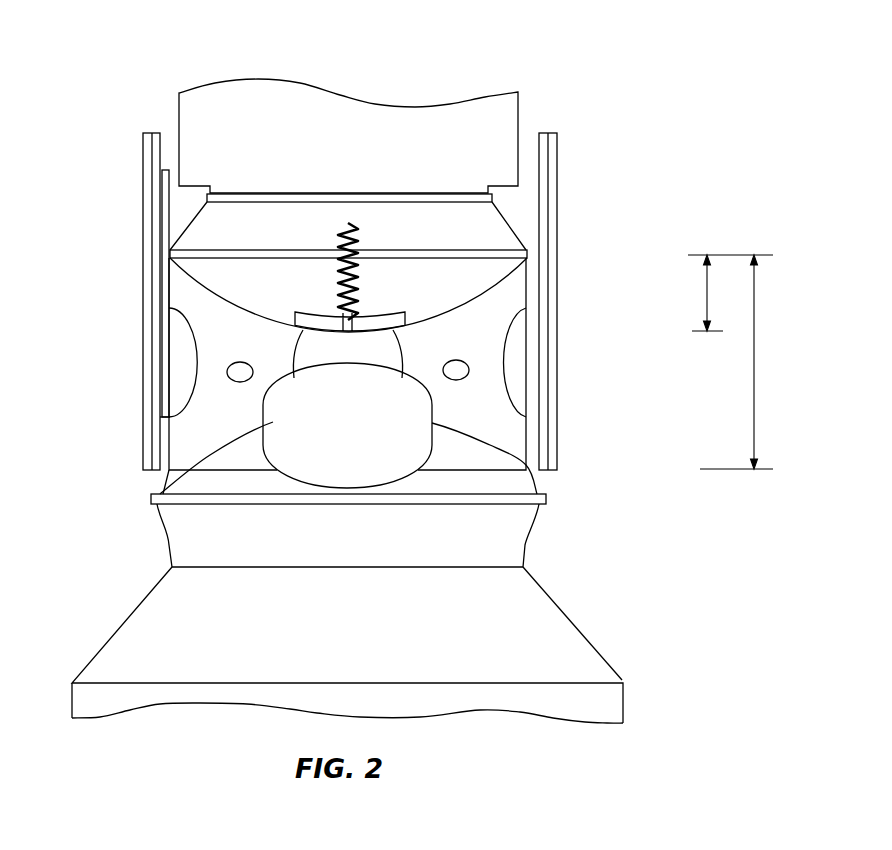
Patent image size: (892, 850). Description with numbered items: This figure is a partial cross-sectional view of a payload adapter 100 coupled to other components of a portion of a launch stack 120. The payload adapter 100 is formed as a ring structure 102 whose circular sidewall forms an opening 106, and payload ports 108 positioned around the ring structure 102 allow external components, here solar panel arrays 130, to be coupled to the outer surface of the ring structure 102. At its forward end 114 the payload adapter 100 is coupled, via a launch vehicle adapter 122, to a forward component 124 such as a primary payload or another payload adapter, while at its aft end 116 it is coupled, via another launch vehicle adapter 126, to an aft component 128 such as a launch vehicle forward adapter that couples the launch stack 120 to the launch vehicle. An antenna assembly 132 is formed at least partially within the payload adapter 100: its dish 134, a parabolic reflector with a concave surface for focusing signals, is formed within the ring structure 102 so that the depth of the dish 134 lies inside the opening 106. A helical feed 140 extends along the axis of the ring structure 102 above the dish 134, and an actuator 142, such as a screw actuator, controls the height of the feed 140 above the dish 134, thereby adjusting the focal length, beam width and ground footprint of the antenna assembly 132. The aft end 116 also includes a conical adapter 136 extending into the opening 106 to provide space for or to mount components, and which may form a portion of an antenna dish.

The payload adapter 100 is at (178, 292).
The ring structure 102 is at (530, 462).
The opening 106 is at (202, 418).
The payload ports 108 is at (170, 308).
The forward end 114 is at (172, 246).
The aft end 116 is at (163, 477).
The launch stack 120 is at (567, 78).
The launch vehicle adapter 122 is at (505, 215).
The forward component 124 is at (368, 161).
The launch vehicle adapter 126 is at (368, 550).
The aft component 128 is at (368, 645).
The solar panel arrays 130 is at (152, 372).
The antenna assembly 132 is at (268, 292).
The dish 134 is at (508, 268).
The conical adapter 136 is at (505, 457).
The helical feed 140 is at (343, 238).
The actuator 142 is at (405, 322).